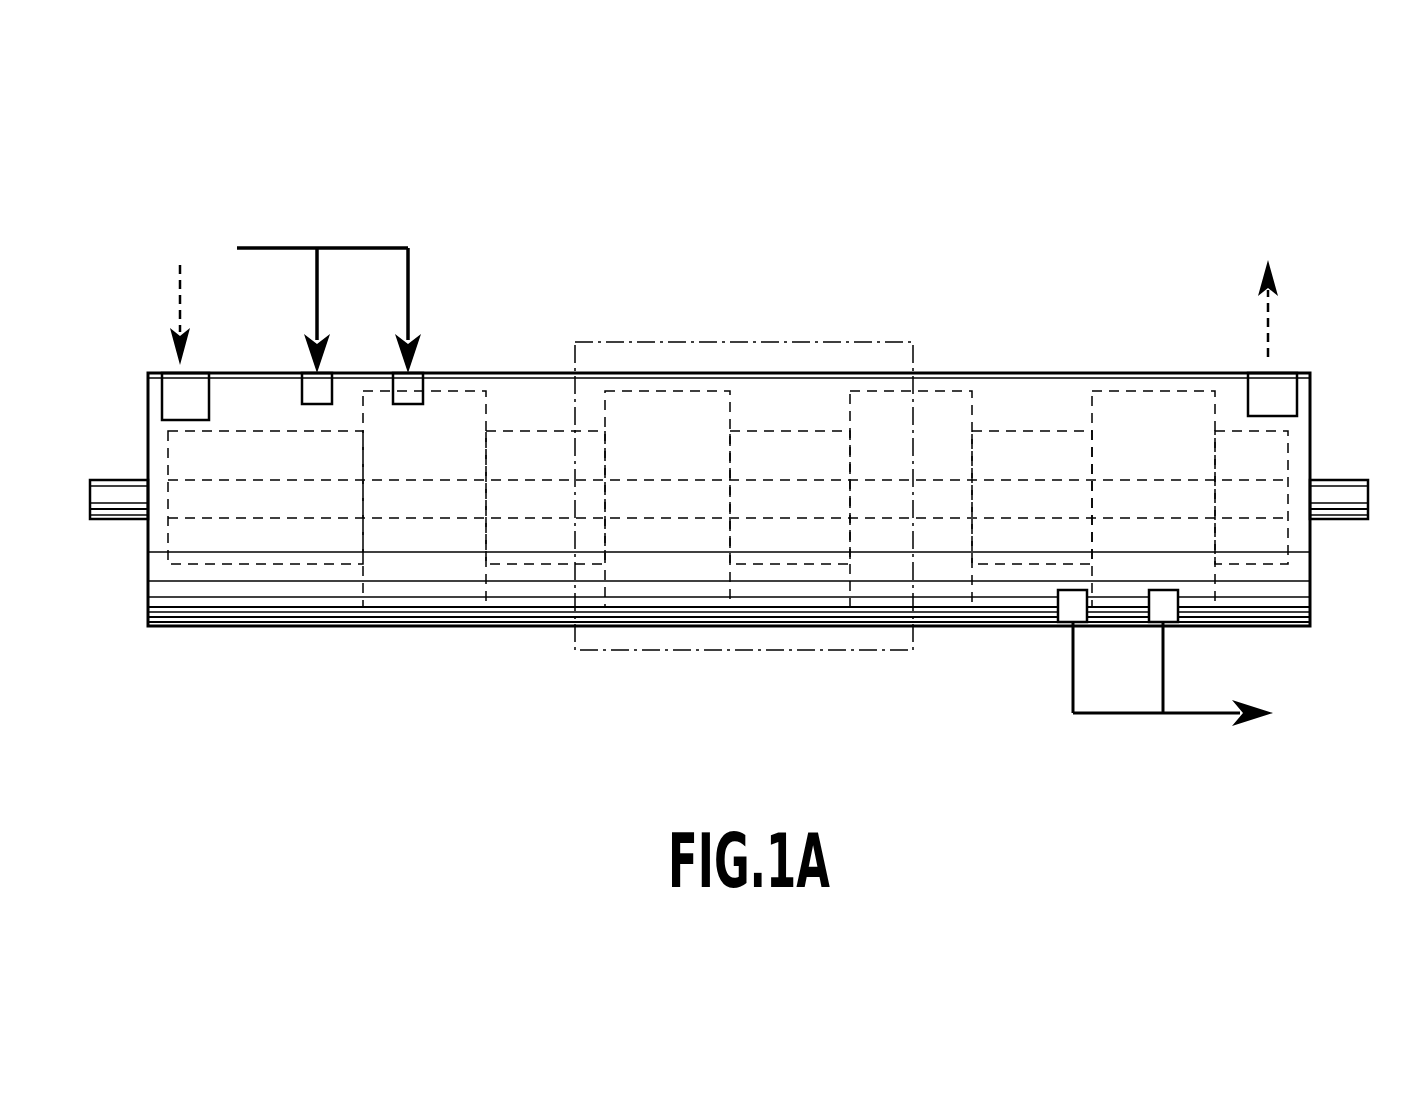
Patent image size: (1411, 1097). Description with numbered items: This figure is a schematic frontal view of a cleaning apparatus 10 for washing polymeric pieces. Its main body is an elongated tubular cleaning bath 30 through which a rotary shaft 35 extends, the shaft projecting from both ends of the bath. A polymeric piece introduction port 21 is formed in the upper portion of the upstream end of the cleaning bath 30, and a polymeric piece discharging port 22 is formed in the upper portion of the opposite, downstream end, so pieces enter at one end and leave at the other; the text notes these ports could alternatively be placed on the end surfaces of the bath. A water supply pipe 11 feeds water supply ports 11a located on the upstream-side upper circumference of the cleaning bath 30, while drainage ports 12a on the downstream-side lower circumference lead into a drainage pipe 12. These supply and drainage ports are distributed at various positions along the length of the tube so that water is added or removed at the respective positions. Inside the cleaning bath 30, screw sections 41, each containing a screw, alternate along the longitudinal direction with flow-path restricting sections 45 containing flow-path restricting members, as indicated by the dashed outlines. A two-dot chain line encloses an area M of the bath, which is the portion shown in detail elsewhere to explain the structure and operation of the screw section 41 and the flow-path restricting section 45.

The cleaning apparatus 10 is at (1052, 282).
The water supply pipe 11 is at (408, 270).
The water supply ports 11a is at (420, 372).
The drainage pipe 12 is at (1112, 716).
The drainage ports 12a is at (1060, 626).
The polymeric piece introduction port 21 is at (170, 372).
The polymeric piece discharging port 22 is at (1252, 372).
The cleaning bath 30 is at (215, 627).
The rotary shaft 35 is at (193, 518).
The screw sections 41 is at (777, 432).
The flow-path restricting sections 45 is at (943, 382).
The area M is at (763, 652).